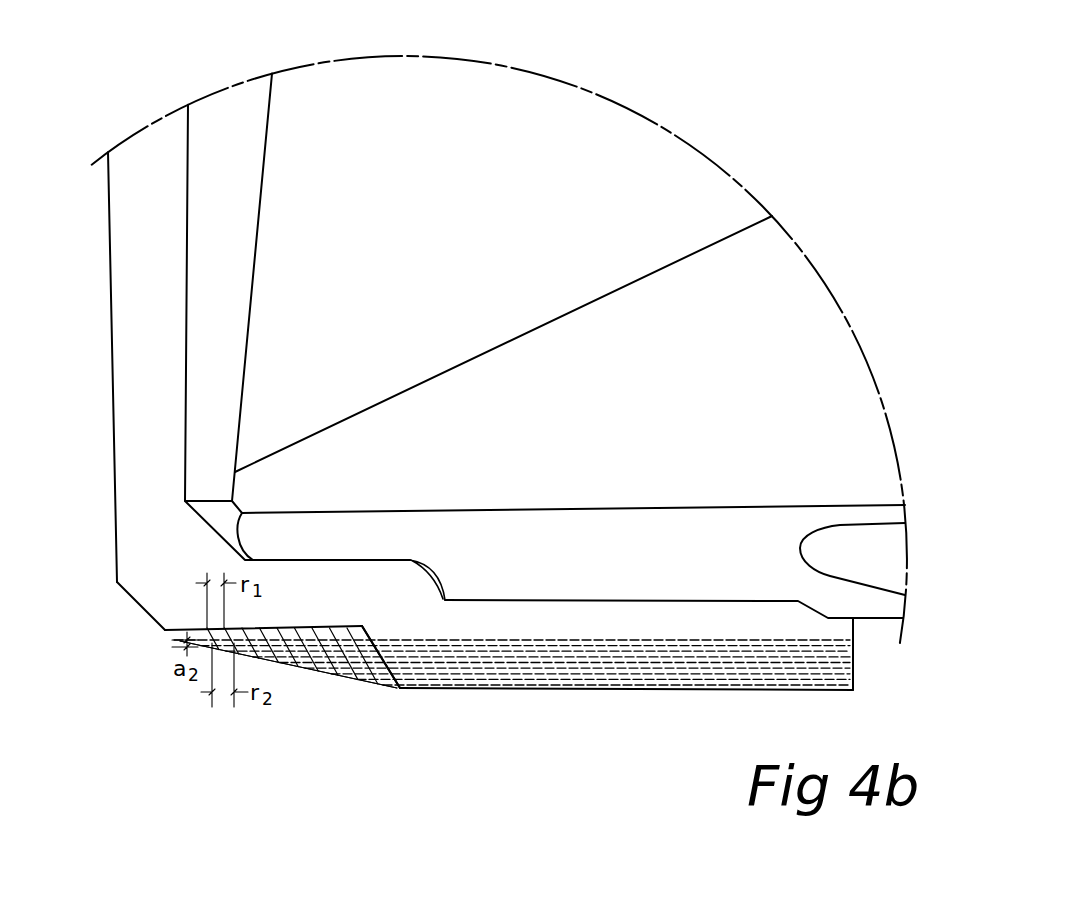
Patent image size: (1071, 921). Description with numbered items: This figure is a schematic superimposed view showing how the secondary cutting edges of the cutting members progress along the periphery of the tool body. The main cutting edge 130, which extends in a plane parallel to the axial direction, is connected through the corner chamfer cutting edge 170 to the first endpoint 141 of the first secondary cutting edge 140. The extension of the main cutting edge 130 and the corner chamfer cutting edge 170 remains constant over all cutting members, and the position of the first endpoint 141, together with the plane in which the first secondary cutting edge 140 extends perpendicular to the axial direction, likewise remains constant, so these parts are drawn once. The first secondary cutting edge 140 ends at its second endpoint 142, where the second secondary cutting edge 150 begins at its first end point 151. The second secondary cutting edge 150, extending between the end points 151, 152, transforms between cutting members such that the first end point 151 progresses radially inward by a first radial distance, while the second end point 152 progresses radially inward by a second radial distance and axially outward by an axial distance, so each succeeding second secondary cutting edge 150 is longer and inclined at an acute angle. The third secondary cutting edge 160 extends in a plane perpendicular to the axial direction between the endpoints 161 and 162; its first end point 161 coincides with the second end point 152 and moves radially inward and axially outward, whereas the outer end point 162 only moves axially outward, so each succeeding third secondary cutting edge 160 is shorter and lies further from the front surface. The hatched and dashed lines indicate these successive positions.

The main cutting edge 130 is at (113, 478).
The corner chamfer cutting edge 170 is at (137, 602).
The first endpoint of the first secondary cutting edge 141 is at (165, 632).
The first secondary cutting edge 140 is at (325, 630).
The second endpoint of the first secondary cutting edge 142 is at (363, 626).
The second secondary cutting edge 150 is at (382, 666).
The first end point of the second secondary cutting edge 151 is at (288, 664).
The second end point of the second secondary cutting edge 152 is at (400, 688).
The third secondary cutting edge 160 is at (608, 690).
The first end point of the third secondary cutting edge 161 is at (626, 689).
The outer end point of the third secondary cutting edge 162 is at (853, 689).